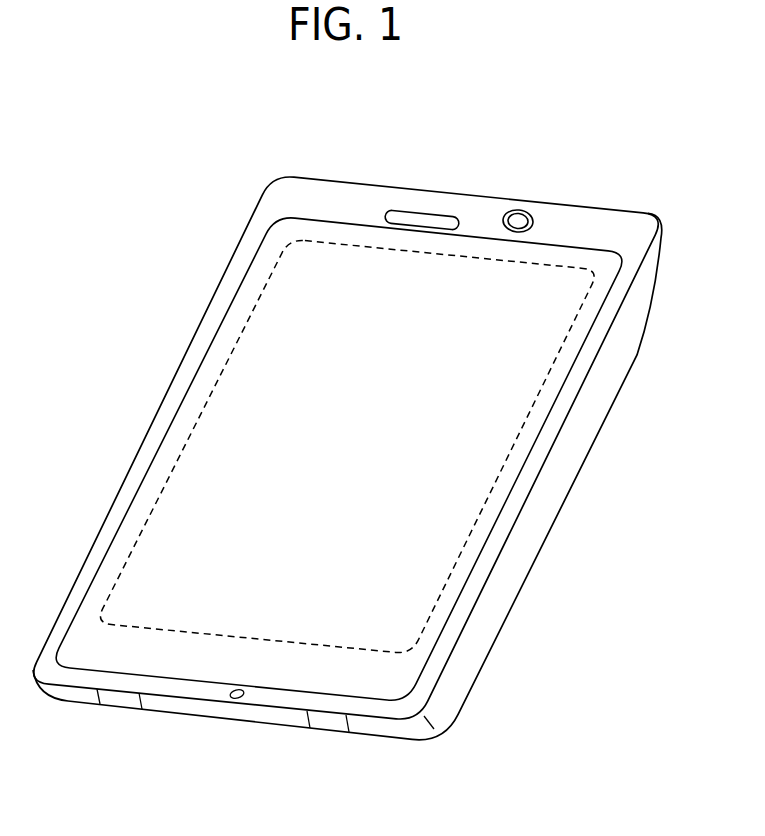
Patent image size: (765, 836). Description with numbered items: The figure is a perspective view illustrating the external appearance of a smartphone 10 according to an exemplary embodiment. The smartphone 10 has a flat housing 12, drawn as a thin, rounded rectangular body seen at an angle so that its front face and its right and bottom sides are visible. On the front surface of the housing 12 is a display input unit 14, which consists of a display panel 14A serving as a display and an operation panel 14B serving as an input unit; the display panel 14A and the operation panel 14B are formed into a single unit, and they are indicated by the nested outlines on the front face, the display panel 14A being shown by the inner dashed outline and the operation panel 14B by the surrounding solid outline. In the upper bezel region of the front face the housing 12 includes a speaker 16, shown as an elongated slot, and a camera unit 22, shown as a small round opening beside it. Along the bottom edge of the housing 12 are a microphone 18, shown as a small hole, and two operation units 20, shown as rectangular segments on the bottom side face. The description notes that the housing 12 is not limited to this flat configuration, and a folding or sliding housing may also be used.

The smartphone 10 is at (139, 230).
The housing 12 is at (282, 190).
The display input unit 14 is at (649, 140).
The display panel 14A is at (548, 263).
The operation panel 14B is at (600, 250).
The speaker 16 is at (427, 221).
The microphone 18 is at (232, 698).
The operation units 20 is at (121, 701).
The camera unit 22 is at (517, 213).